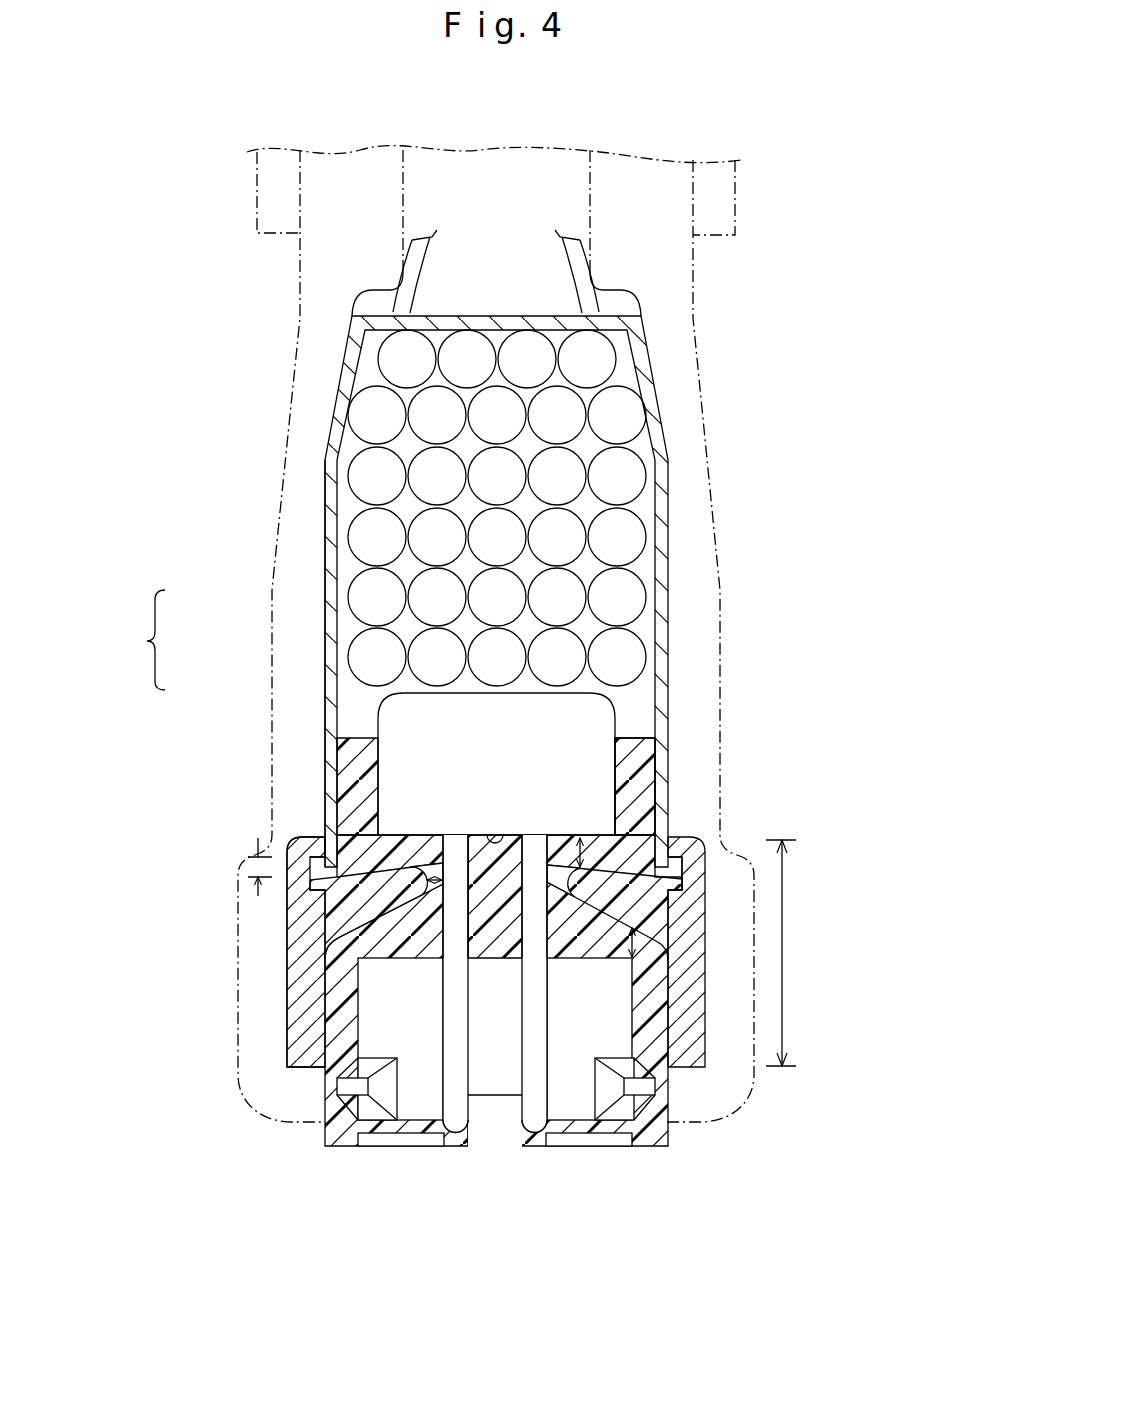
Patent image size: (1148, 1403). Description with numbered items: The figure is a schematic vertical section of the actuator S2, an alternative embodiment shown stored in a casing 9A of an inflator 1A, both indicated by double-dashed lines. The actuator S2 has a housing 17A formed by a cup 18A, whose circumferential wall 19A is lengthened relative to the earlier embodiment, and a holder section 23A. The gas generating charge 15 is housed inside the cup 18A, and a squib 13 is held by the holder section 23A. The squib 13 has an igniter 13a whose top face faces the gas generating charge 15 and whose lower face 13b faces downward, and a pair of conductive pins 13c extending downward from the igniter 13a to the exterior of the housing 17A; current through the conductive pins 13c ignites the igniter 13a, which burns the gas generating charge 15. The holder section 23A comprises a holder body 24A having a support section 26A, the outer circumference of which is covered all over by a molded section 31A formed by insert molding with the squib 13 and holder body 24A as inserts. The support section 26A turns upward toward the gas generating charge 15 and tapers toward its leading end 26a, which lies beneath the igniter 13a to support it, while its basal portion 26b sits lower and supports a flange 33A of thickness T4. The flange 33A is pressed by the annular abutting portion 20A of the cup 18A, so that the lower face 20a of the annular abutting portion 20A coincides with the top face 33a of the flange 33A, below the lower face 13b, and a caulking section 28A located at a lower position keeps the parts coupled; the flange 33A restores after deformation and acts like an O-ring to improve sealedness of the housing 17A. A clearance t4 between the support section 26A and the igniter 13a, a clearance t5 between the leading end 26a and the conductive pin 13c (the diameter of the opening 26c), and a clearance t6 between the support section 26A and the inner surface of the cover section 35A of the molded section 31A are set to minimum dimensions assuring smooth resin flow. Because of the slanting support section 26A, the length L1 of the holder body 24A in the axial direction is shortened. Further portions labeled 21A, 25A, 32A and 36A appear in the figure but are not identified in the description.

The inflator 1A is at (749, 200).
The casing 9A is at (710, 636).
The actuator S2 is at (690, 363).
The rim portion 21A is at (497, 316).
The circumferential wall 19A is at (668, 540).
The gas generating charge 15 is at (634, 472).
The housing 17A is at (131, 640).
The cup 18A is at (320, 577).
The holder section 23A is at (279, 815).
The flange 33A is at (317, 913).
The top face of the flange 33a is at (303, 842).
The holder body 24A is at (712, 1050).
The flange lower portion 25A is at (293, 1047).
The lower face of the annular abutting portion 20a is at (698, 880).
The caulking section 28A is at (686, 843).
The annular abutting portion 20A is at (670, 855).
The step portion 32A is at (642, 752).
The igniter 13a is at (590, 725).
The leading end of the support section 26a is at (397, 955).
The center portion 36A is at (483, 880).
The molded section 31A is at (314, 1094).
The cover section 35A is at (657, 1066).
The squib 13 is at (434, 1062).
The conductive pins 13c is at (533, 1122).
The lower face of the igniter 13b is at (502, 833).
The support section 26A is at (375, 868).
The basal portion of the support section 26b is at (330, 938).
The opening 26c is at (537, 866).
The thickness of the flange T4 is at (255, 870).
The length of the holder body L1 is at (791, 953).
The clearance between support section and igniter t4 is at (580, 836).
The clearance between leading end and conductive pin t5 is at (432, 888).
The clearance between support section and cover section t6 is at (628, 958).